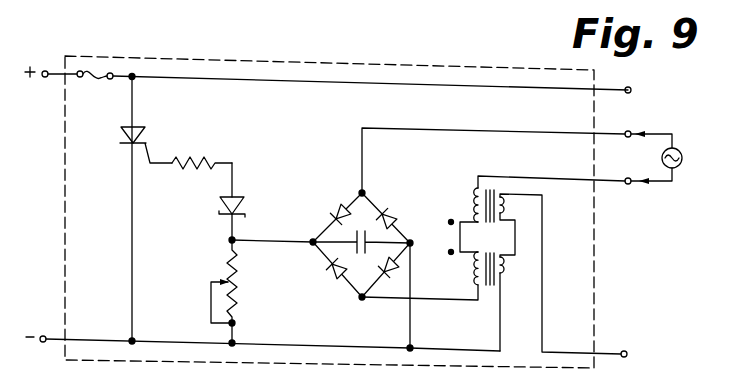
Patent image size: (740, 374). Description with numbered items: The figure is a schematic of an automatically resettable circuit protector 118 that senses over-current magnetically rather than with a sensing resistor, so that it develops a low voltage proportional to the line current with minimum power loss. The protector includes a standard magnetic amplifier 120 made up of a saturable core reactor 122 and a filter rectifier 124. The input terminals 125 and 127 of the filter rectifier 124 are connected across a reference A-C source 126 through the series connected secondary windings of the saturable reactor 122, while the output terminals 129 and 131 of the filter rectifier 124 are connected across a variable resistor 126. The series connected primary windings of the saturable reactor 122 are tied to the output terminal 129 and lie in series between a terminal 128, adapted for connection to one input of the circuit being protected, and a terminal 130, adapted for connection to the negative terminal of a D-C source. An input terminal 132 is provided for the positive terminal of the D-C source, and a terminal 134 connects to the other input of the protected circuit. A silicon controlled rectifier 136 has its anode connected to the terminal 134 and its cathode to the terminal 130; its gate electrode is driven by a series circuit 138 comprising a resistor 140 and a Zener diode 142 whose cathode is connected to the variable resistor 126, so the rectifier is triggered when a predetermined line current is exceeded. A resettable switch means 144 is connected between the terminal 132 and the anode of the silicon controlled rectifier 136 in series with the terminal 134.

The circuit protector 118 is at (334, 61).
The magnetic amplifier 120 is at (454, 156).
The saturable core reactor 122 is at (500, 184).
The filter rectifier 124 is at (352, 176).
The input terminal 125 is at (366, 193).
The variable resistor 126 is at (238, 266).
The input terminal 127 is at (361, 299).
The terminal 128 is at (627, 351).
The output terminal 129 is at (412, 346).
The terminal 130 is at (54, 320).
The output terminal 131 is at (230, 240).
The input terminal 132 is at (47, 71).
The terminal 134 is at (632, 88).
The silicon controlled rectifier 136 is at (143, 133).
The series circuit 138 is at (244, 170).
The resistor 140 is at (198, 153).
The Zener diode 142 is at (240, 197).
The resettable switch means 144 is at (104, 62).